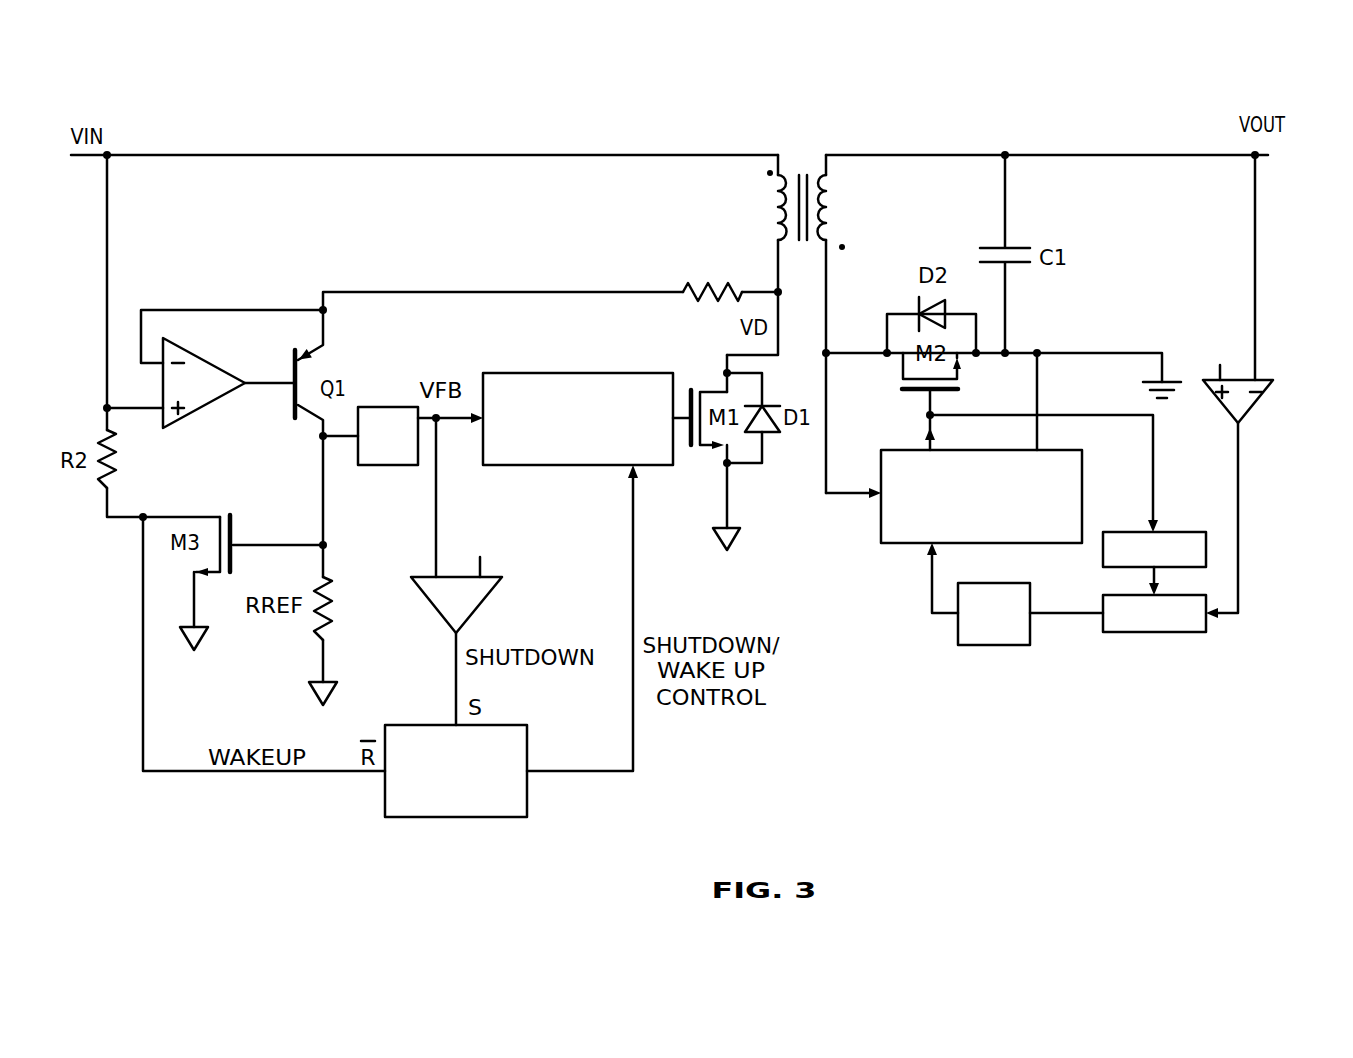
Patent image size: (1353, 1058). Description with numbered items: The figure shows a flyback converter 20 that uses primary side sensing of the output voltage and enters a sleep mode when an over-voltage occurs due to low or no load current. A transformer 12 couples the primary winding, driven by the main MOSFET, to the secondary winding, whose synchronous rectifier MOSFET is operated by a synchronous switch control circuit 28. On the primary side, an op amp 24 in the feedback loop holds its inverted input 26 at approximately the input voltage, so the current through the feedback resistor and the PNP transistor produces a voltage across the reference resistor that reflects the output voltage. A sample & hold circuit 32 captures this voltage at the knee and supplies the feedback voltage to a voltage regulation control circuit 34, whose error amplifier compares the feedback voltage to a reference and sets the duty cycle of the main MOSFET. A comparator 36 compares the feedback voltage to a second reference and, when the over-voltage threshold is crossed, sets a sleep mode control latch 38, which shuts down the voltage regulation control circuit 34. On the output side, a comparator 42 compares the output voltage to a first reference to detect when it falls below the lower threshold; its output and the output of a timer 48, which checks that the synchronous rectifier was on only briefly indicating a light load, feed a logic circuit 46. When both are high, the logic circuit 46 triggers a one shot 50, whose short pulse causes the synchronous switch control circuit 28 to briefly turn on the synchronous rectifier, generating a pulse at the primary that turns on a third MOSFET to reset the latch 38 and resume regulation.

The transformer 12 is at (800, 152).
The converter 20 is at (622, 236).
The op amp 24 is at (205, 410).
The inverted input 26 is at (163, 366).
The synchronous switch control circuit 28 is at (907, 543).
The sample & hold circuit 32 is at (373, 465).
The voltage regulation control circuit 34 is at (531, 373).
The comparator 36 is at (486, 597).
The sleep mode control latch 38 is at (527, 783).
The comparator 42 is at (1246, 410).
The logic circuit 46 is at (1103, 623).
The timer 48 is at (1103, 553).
The one shot 50 is at (985, 645).